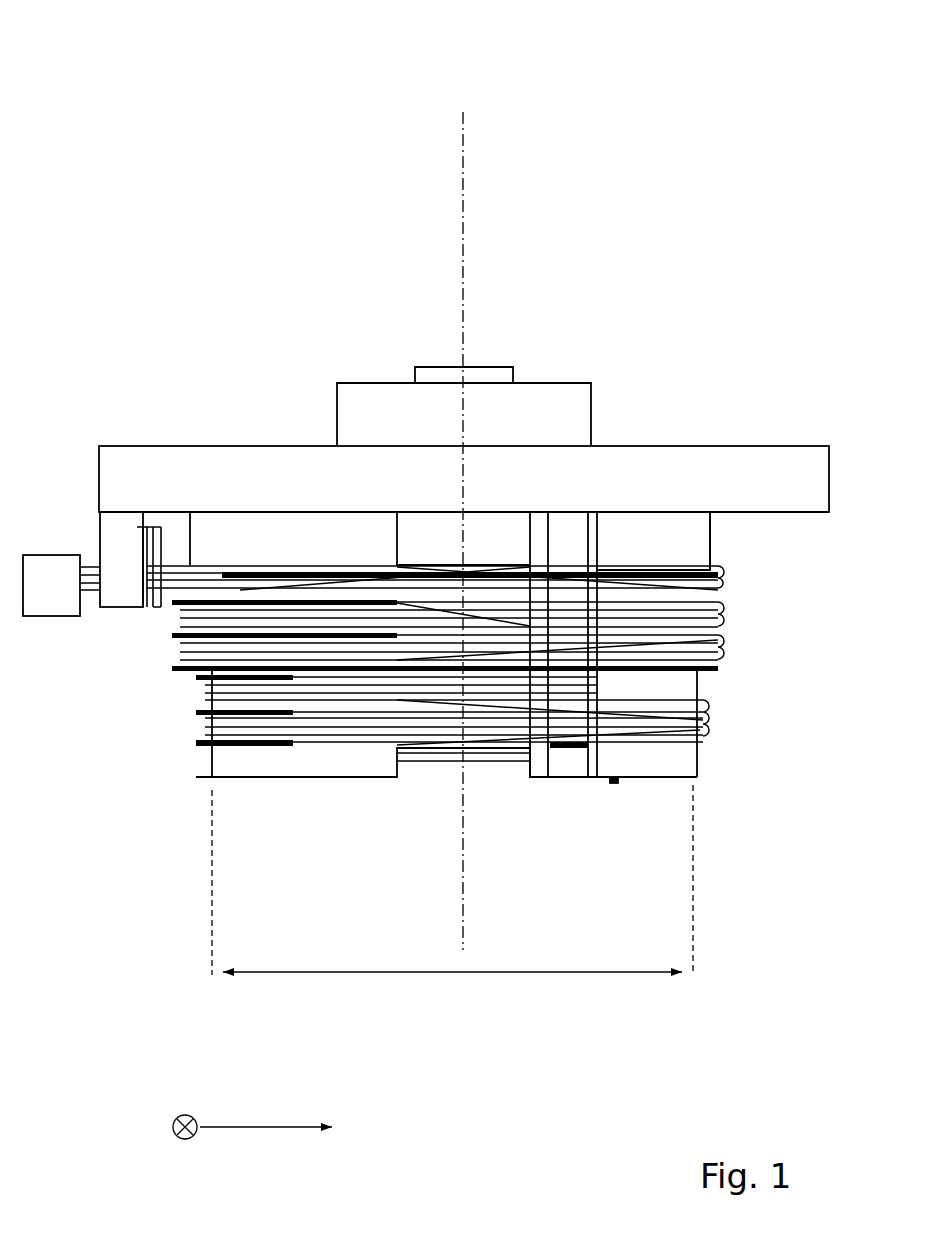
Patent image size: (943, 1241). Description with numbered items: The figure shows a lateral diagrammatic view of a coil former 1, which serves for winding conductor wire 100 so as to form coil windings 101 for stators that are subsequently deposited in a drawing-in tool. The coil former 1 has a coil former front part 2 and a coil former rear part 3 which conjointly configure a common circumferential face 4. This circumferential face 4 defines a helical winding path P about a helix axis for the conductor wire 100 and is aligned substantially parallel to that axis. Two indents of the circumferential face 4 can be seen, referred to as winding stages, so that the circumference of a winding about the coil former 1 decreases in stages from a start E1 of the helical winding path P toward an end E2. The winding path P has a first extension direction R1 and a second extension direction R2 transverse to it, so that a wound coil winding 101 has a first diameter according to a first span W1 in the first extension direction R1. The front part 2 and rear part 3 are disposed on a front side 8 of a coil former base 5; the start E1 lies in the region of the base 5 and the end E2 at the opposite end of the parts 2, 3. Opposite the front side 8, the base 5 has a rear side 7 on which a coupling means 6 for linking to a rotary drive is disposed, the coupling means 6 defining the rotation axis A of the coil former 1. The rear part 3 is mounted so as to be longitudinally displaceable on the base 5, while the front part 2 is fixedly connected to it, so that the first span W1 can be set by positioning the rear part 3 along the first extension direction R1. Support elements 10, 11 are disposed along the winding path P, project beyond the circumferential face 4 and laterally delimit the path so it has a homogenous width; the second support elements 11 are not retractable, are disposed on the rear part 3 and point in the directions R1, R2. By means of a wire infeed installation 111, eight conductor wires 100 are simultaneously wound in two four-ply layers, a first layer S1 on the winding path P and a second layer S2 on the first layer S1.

The coil former 1 is at (115, 110).
The coil former front part 2 is at (652, 548).
The coil former rear part 3 is at (267, 540).
The circumferential face 4 is at (713, 552).
The coil former base 5 is at (636, 480).
The coupling means 6 is at (513, 366).
The rear side 7 is at (752, 441).
The front side 8 is at (777, 506).
The support element 10 is at (568, 749).
The second support element 11 is at (172, 668).
The conductor wire 100 is at (79, 553).
The coil winding 101 is at (670, 617).
The wire infeed installation 111 is at (51, 596).
The start of the helical winding path E1 is at (208, 562).
The end of the helical winding path E2 is at (205, 755).
The first layer S1 is at (708, 672).
The second layer S2 is at (713, 660).
The helical winding path P is at (658, 717).
The rotation axis A is at (496, 524).
The first span W1 is at (452, 895).
The first extension direction R1 is at (266, 1147).
The second extension direction R2 is at (187, 1112).